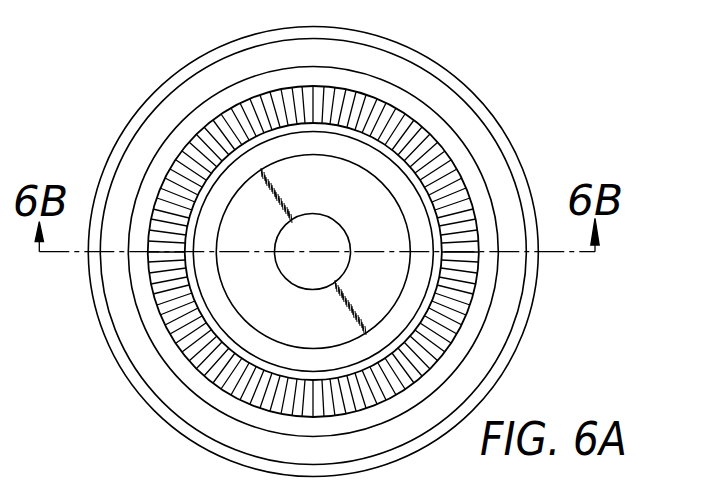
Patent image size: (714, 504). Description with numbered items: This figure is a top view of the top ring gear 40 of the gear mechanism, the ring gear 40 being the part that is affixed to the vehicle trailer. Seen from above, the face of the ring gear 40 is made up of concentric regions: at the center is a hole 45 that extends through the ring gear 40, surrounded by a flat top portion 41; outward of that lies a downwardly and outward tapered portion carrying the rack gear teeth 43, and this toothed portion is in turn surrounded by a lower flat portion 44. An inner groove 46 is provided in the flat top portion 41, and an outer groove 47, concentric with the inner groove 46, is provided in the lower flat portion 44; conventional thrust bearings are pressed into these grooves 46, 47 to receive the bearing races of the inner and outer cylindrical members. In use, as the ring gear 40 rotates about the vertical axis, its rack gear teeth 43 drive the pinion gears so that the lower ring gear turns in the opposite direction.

The ring gear 40 is at (508, 140).
The flat top portion 41 is at (318, 329).
The rack gear teeth 43 is at (203, 350).
The lower flat portion 44 is at (107, 327).
The hole 45 is at (290, 218).
The inner groove 46 is at (224, 208).
The outer groove 47 is at (120, 168).